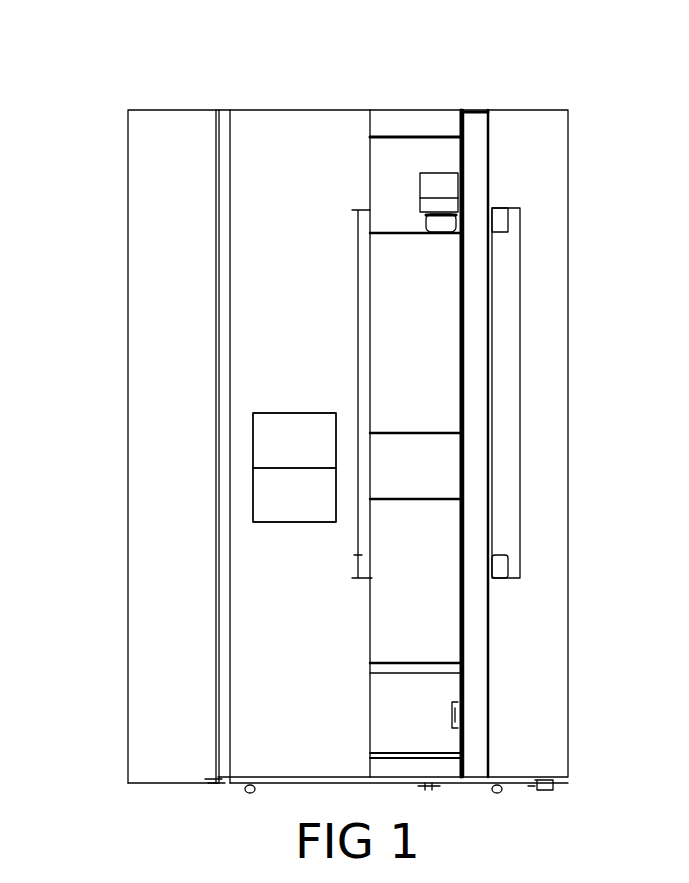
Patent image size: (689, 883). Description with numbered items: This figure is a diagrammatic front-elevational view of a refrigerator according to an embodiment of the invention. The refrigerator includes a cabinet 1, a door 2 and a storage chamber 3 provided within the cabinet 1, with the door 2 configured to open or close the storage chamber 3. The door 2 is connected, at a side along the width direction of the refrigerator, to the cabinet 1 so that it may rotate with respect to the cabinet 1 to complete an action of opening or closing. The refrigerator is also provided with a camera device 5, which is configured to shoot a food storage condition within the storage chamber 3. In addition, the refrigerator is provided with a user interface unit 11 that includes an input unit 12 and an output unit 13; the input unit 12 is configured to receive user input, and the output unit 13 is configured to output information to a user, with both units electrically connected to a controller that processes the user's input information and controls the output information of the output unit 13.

The cabinet 1 is at (160, 146).
The door 2 is at (306, 130).
The storage chamber 3 is at (402, 160).
The camera device 5 is at (443, 228).
The user interface unit 11 is at (253, 430).
The input unit 12 is at (303, 420).
The output unit 13 is at (267, 510).